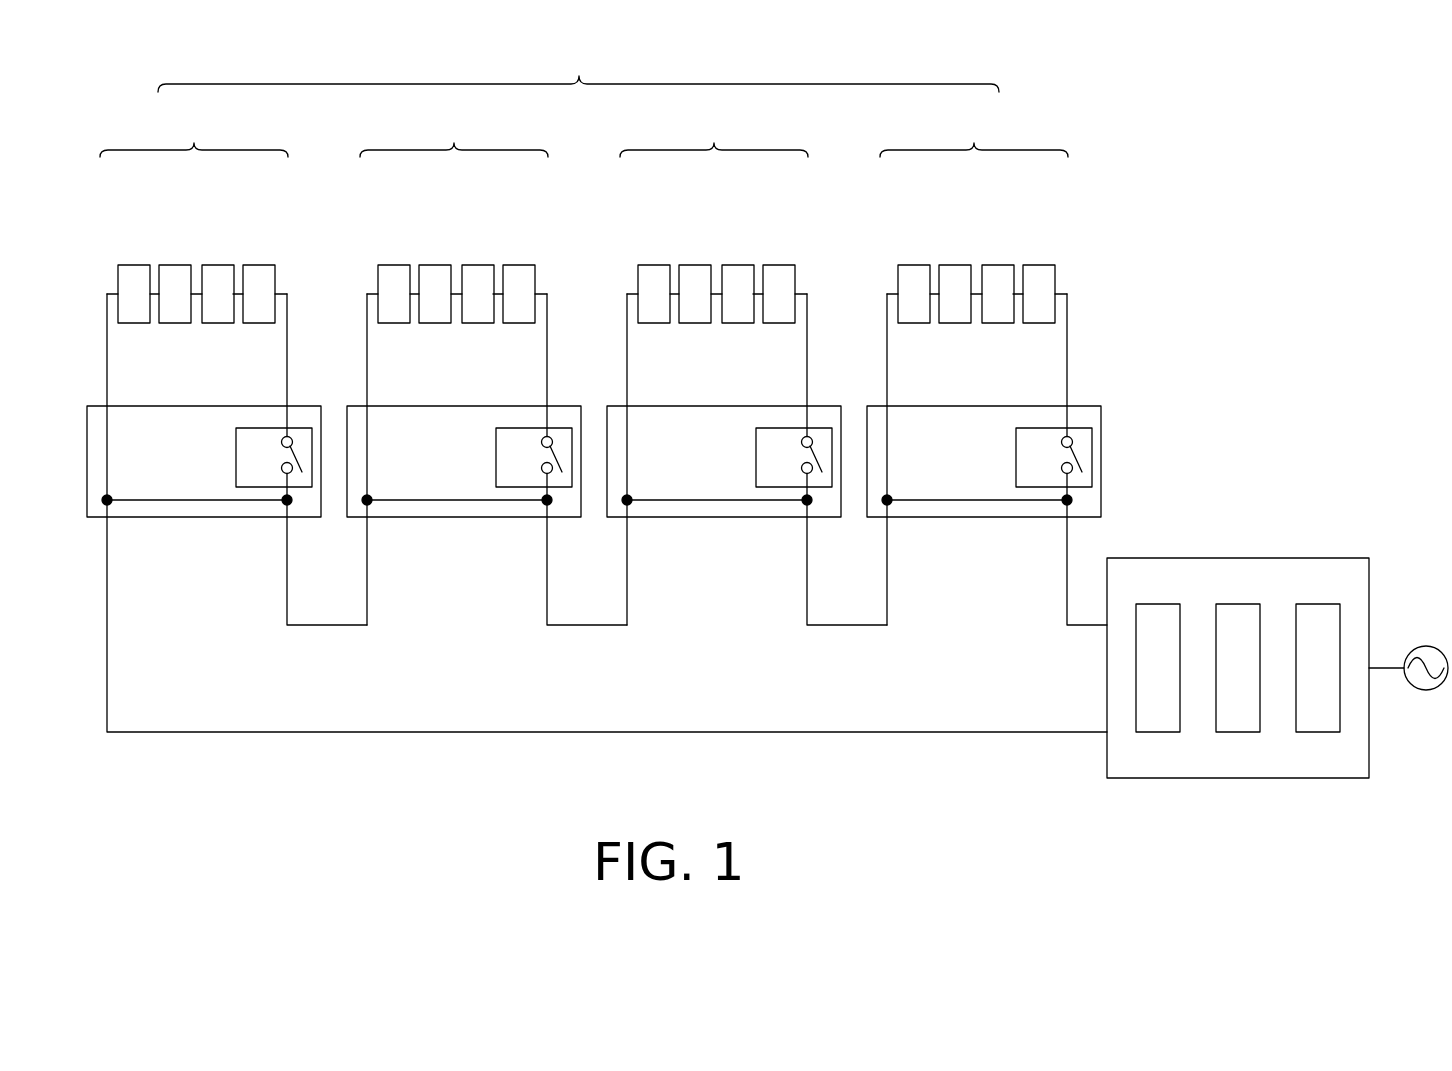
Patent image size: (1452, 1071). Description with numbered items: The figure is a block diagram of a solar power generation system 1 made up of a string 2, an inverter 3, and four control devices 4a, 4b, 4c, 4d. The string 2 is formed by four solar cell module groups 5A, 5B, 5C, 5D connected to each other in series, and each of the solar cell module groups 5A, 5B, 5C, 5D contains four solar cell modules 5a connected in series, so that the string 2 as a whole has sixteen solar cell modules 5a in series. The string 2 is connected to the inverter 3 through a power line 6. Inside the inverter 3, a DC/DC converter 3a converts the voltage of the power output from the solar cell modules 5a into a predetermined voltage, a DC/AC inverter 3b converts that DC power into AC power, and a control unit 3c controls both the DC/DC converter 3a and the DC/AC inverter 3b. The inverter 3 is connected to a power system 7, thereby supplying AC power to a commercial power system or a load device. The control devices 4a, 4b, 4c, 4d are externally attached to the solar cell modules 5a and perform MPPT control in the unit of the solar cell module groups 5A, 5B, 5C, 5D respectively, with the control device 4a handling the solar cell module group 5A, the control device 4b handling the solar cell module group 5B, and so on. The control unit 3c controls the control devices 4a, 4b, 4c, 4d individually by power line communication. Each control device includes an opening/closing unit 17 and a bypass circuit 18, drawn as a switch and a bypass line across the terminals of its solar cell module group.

The solar power generation system 1 is at (1272, 193).
The string 2 is at (578, 67).
The inverter 3 is at (1355, 557).
The DC/DC converter 3a is at (1158, 604).
The DC/AC inverter 3b is at (1238, 604).
The control unit 3c is at (1318, 604).
The control device 4a is at (204, 518).
The control device 4b is at (464, 518).
The control device 4c is at (724, 518).
The control device 4d is at (984, 518).
The solar cell module group 5A is at (194, 129).
The solar cell module group 5B is at (454, 129).
The solar cell module group 5C is at (714, 129).
The solar cell module group 5D is at (974, 129).
The solar cell module 5a is at (270, 265).
The power line 6 is at (1067, 370).
The power system 7 is at (1428, 646).
The opening/closing unit 17 is at (252, 488).
The bypass circuit 18 is at (135, 503).